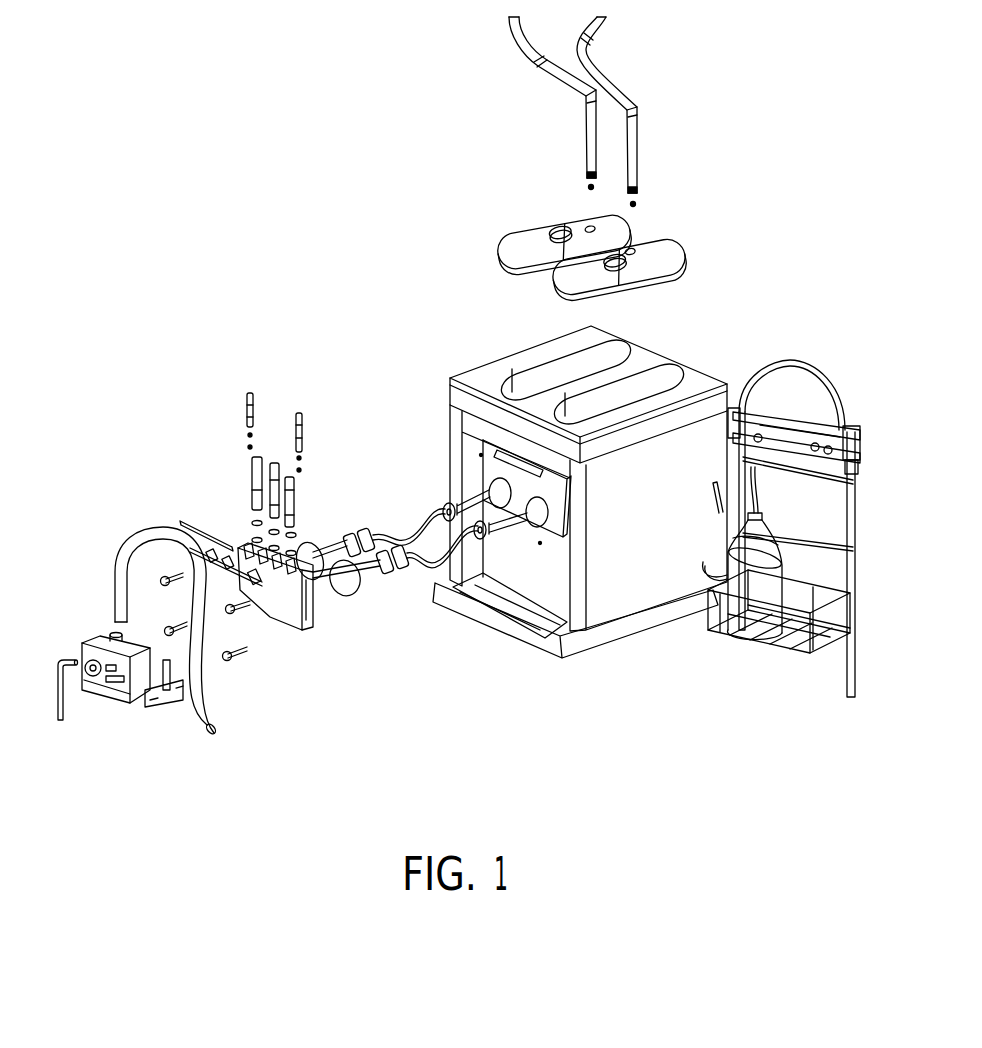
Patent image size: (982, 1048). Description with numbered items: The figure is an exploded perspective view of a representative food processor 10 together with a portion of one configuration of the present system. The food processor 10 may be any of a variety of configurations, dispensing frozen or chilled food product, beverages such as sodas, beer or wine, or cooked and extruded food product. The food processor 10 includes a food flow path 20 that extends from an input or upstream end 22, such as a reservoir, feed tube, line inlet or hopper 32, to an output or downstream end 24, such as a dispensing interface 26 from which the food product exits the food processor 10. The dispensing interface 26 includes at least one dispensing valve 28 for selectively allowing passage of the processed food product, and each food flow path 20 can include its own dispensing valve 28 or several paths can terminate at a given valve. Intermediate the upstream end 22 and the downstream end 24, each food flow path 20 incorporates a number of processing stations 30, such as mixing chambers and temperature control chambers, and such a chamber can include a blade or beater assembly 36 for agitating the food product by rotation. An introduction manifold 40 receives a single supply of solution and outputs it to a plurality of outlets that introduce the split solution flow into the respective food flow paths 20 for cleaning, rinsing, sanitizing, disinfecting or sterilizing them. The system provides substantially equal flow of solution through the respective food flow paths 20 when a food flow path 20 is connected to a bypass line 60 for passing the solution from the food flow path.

The food processor 10 is at (405, 313).
The food flow path 20 is at (532, 520).
The upstream end 22 is at (675, 364).
The downstream end 24 is at (274, 608).
The dispensing interface 26 is at (214, 470).
The dispensing valve 28 is at (250, 507).
The processing station 30 is at (417, 573).
The hopper 32 is at (716, 370).
The blade or beater assembly 36 is at (384, 528).
The introduction manifold 40 is at (149, 720).
The bypass line 60 is at (588, 143).